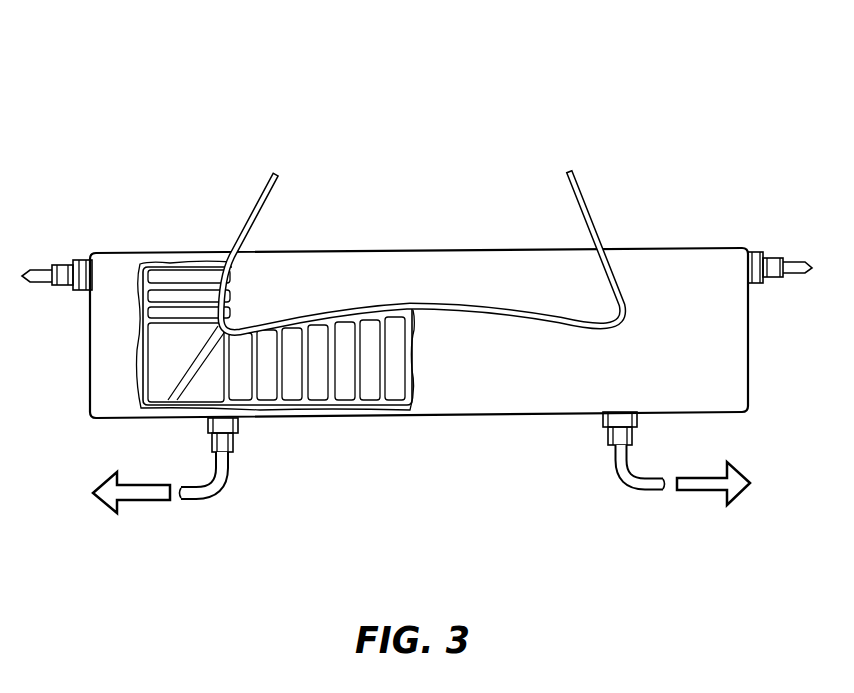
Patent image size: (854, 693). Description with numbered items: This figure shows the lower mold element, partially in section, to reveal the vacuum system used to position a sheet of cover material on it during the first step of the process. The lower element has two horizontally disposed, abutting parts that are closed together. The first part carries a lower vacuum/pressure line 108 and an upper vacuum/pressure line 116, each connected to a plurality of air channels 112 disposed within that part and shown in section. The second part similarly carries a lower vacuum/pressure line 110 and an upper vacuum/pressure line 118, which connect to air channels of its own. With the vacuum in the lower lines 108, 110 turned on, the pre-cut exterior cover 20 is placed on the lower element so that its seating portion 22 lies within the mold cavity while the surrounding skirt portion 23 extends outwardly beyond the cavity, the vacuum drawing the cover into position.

The exterior cover 20 is at (520, 309).
The seating portion 22 is at (357, 308).
The surrounding skirt portion 23 is at (266, 192).
The lower vacuum/pressure line 108 is at (208, 488).
The lower vacuum/pressure line 110 is at (620, 472).
The air channels 112 is at (348, 380).
The upper vacuum/pressure line 116 is at (43, 270).
The upper vacuum/pressure line 118 is at (796, 262).